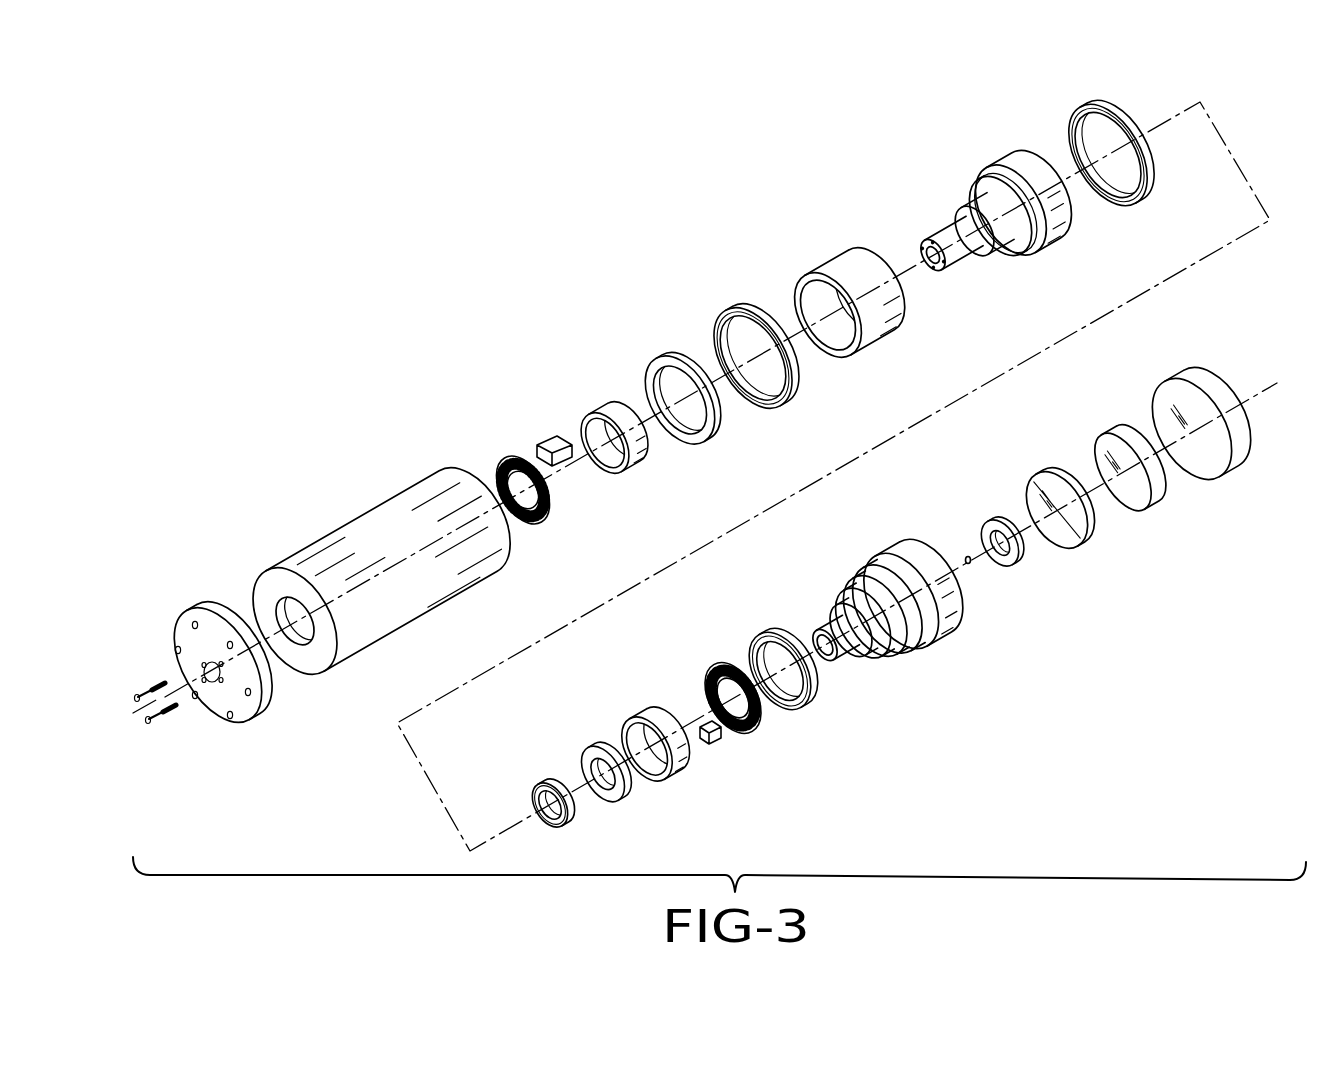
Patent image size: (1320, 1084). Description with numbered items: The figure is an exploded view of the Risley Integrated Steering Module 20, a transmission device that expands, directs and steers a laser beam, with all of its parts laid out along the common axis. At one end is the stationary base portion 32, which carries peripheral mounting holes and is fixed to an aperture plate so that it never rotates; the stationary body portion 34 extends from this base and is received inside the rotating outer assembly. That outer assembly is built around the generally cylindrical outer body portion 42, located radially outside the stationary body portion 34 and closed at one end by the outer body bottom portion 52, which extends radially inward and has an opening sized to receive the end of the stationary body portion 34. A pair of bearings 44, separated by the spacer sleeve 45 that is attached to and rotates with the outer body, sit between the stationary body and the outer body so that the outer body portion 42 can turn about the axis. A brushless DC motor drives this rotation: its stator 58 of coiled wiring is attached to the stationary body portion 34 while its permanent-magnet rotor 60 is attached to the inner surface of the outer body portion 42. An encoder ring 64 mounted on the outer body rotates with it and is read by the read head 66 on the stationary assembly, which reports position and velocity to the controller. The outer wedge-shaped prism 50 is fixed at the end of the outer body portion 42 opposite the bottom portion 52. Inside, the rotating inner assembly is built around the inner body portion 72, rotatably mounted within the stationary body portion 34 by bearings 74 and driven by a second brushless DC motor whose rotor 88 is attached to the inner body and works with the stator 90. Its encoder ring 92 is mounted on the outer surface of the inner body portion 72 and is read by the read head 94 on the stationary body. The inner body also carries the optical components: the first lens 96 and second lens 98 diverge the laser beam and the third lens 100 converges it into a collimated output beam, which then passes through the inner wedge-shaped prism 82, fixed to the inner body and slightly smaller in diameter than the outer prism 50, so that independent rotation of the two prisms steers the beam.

The Risley Integrated Steering Module 20 is at (405, 299).
The stationary base portion 32 is at (185, 628).
The stationary body portion 34 is at (988, 174).
The outer body portion 42 is at (367, 546).
The bearings 44 is at (733, 311).
The spacer sleeve 45 is at (820, 265).
The wedge-shaped prism 50 is at (1181, 380).
The outer body bottom portion 52 is at (270, 576).
The stator 58 is at (658, 358).
The rotor 60 is at (602, 406).
The encoder ring 64 is at (503, 460).
The read head 66 is at (545, 436).
The inner body portion 72 is at (884, 554).
The bearings 74 is at (766, 630).
The wedge-shaped prism 82 is at (1108, 430).
The rotor 88 is at (590, 748).
The stator 90 is at (643, 710).
The encoder ring 92 is at (713, 664).
The read head 94 is at (721, 746).
The first lens 96 is at (965, 557).
The second lens 98 is at (992, 520).
The third lens 100 is at (1044, 470).